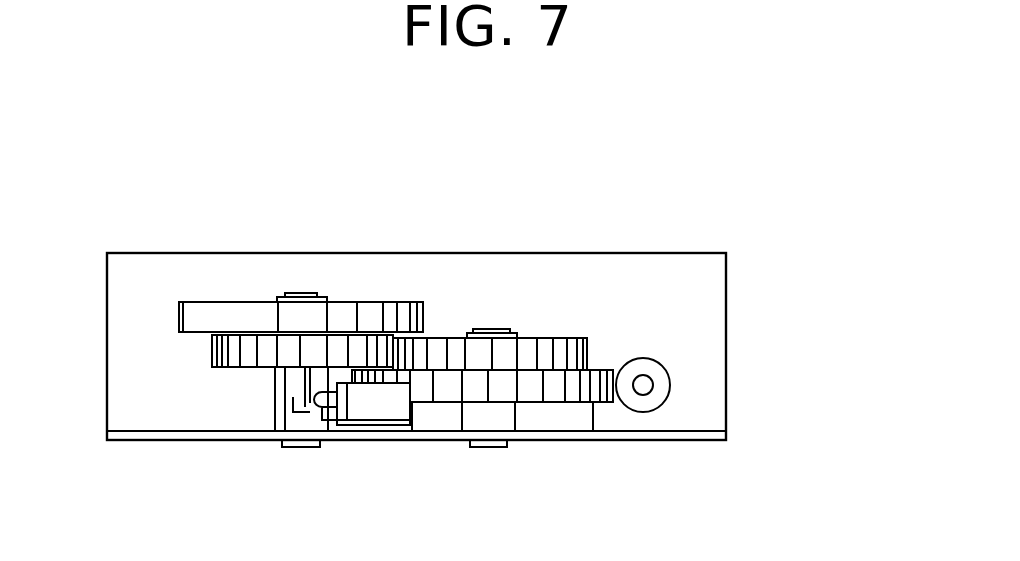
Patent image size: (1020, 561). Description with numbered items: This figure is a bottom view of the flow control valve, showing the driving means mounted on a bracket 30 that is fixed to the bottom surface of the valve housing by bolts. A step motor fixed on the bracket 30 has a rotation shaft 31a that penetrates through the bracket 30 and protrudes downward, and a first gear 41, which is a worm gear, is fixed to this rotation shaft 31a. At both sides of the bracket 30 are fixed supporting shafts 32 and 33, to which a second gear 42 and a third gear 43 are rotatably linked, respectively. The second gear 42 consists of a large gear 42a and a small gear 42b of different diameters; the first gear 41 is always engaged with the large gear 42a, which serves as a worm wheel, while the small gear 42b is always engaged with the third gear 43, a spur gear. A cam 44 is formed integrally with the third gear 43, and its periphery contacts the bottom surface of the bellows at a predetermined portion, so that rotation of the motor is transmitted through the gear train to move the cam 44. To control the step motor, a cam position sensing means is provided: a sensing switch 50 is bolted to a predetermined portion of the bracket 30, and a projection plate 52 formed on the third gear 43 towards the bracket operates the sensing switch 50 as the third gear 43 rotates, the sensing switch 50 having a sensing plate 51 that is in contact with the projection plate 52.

The bracket 30 is at (692, 292).
The rotation shaft 31a is at (653, 385).
The supporting shaft 32 is at (490, 330).
The supporting shaft 33 is at (305, 295).
The first gear 41 is at (663, 407).
The second gear 42 is at (501, 353).
The large gear 42a is at (593, 402).
The small gear 42b is at (577, 337).
The third gear 43 is at (212, 347).
The cam 44 is at (217, 315).
The sensing switch 50 is at (385, 407).
The sensing plate 51 is at (322, 405).
The projection plate 52 is at (292, 412).